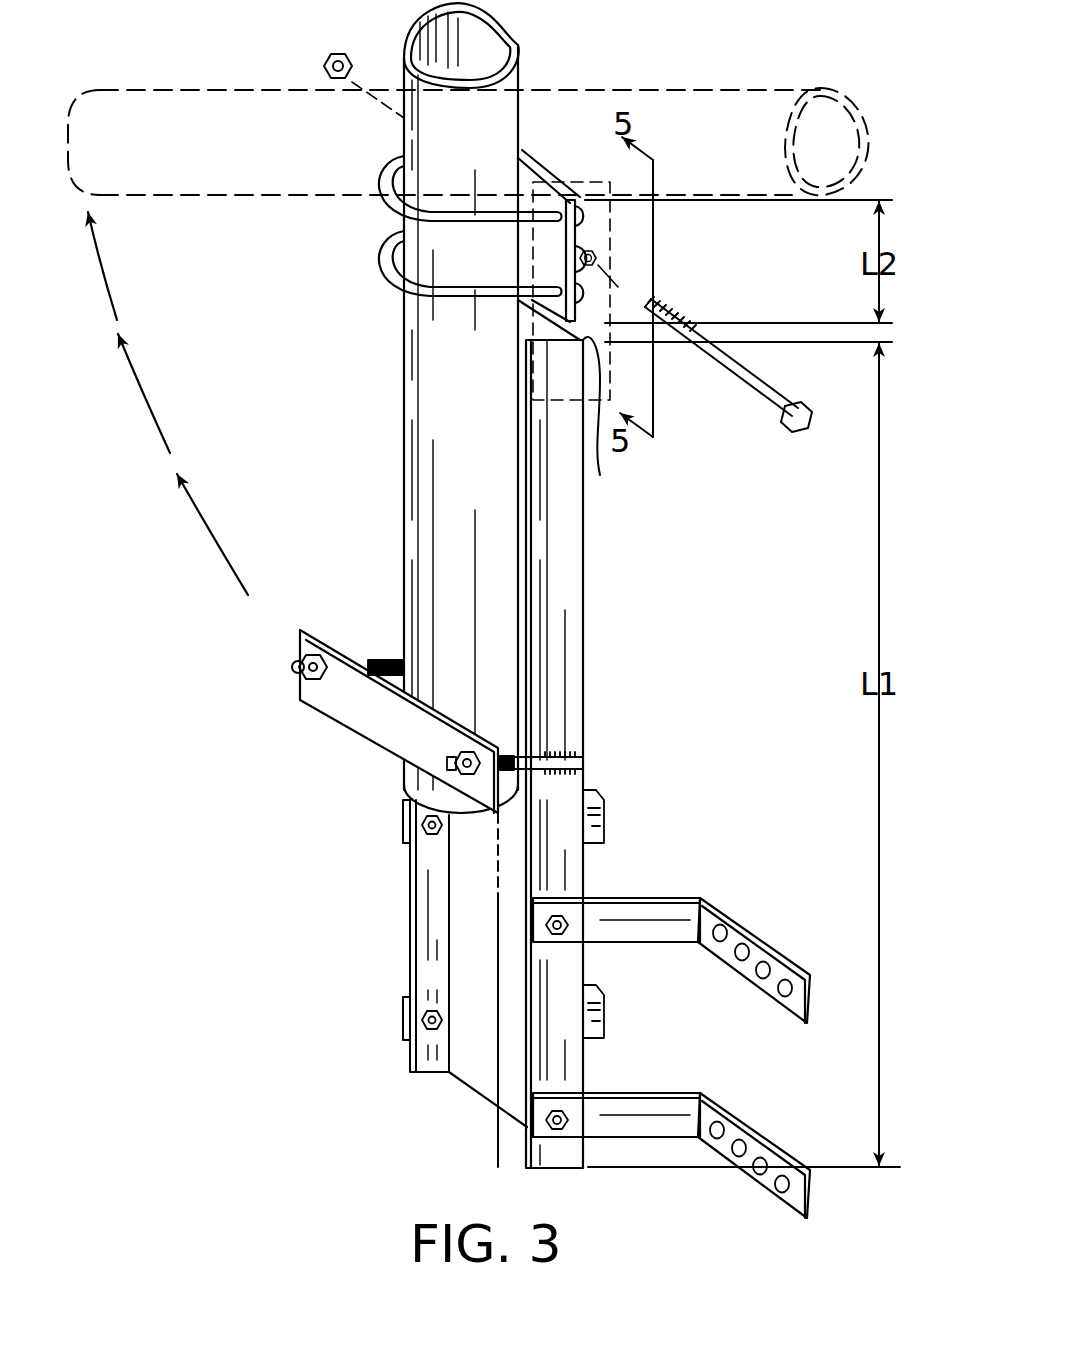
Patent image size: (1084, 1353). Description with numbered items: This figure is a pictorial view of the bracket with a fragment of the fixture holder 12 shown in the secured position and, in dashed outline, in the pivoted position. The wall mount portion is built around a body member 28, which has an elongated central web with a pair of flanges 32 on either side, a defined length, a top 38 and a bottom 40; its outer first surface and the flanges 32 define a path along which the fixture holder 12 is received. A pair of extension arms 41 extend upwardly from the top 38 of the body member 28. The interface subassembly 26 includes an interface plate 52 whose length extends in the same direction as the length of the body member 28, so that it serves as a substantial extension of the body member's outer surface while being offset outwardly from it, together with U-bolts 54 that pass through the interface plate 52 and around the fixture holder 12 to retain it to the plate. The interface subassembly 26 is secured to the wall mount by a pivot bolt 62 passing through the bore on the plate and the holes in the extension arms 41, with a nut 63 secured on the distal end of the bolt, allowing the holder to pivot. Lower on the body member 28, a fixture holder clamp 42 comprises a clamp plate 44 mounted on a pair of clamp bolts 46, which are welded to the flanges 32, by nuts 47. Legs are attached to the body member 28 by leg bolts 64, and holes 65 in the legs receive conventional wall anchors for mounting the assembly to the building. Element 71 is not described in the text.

The fixture holder 12 is at (428, 333).
The interface subassembly 26 is at (588, 308).
The body member 28 is at (470, 870).
The flanges 32 is at (560, 650).
The top 38 is at (600, 475).
The bottom 40 is at (472, 1095).
The extension arms 41 is at (612, 250).
The fixture holder clamp 42 is at (365, 718).
The clamp plate 44 is at (390, 738).
The clamp bolts 46 is at (398, 660).
The nuts 47 is at (300, 655).
The interface plate 52 is at (522, 166).
The U-bolts 54 is at (404, 255).
The pivot bolt 62 is at (768, 393).
The nut 63 is at (326, 60).
The leg bolts 64 is at (565, 920).
The holes 65 is at (745, 952).
The washer 71 is at (618, 287).